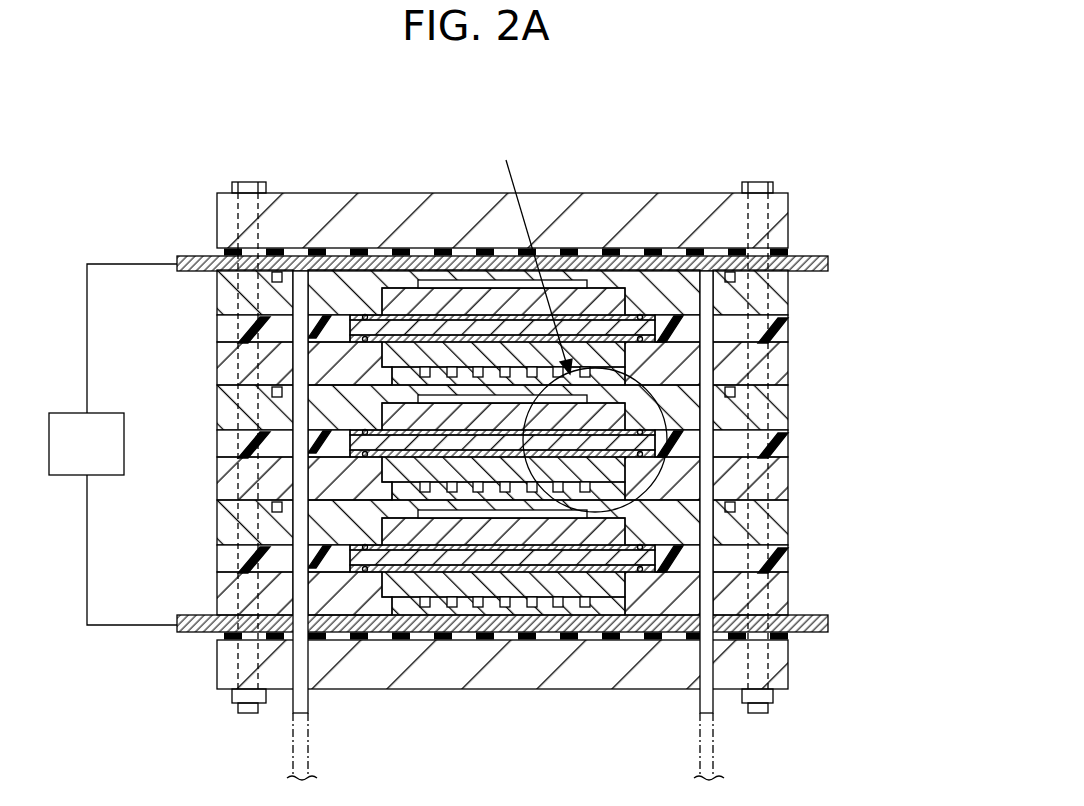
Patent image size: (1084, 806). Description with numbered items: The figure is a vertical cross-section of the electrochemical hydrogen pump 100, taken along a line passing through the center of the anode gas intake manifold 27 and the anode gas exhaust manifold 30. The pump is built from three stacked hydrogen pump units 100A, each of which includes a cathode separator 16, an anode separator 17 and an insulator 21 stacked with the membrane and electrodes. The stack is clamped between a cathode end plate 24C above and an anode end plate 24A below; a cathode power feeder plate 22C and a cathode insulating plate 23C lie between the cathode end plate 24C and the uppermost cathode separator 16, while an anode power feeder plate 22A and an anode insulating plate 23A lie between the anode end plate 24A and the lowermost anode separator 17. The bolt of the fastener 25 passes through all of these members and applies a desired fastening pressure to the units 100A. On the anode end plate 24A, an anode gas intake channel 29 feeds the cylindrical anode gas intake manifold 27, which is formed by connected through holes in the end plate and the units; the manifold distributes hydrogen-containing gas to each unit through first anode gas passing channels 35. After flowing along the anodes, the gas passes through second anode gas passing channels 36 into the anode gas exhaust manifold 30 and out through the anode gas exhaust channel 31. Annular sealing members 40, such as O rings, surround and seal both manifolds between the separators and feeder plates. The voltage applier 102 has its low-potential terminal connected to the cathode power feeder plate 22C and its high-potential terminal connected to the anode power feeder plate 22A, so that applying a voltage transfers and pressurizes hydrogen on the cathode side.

The electrochemical hydrogen pump 100 is at (397, 93).
The hydrogen pump unit 100A is at (213, 388).
The voltage applier 102 is at (112, 460).
The cathode separator 16 is at (791, 406).
The anode separator 17 is at (791, 478).
The insulator 21 is at (791, 440).
The anode power feeder plate 22A is at (830, 622).
The cathode power feeder plate 22C is at (830, 263).
The anode insulating plate 23A is at (785, 634).
The cathode insulating plate 23C is at (780, 252).
The anode end plate 24A is at (782, 660).
The cathode end plate 24C is at (785, 207).
The fastener 25 is at (248, 185).
The anode gas intake manifold 27 is at (252, 559).
The anode gas intake channel 29 is at (300, 742).
The anode gas exhaust manifold 30 is at (790, 553).
The anode gas exhaust channel 31 is at (706, 742).
The first anode gas passing channel 35 is at (373, 613).
The second anode gas passing channel 36 is at (635, 613).
The annular sealing member 40 is at (784, 364).